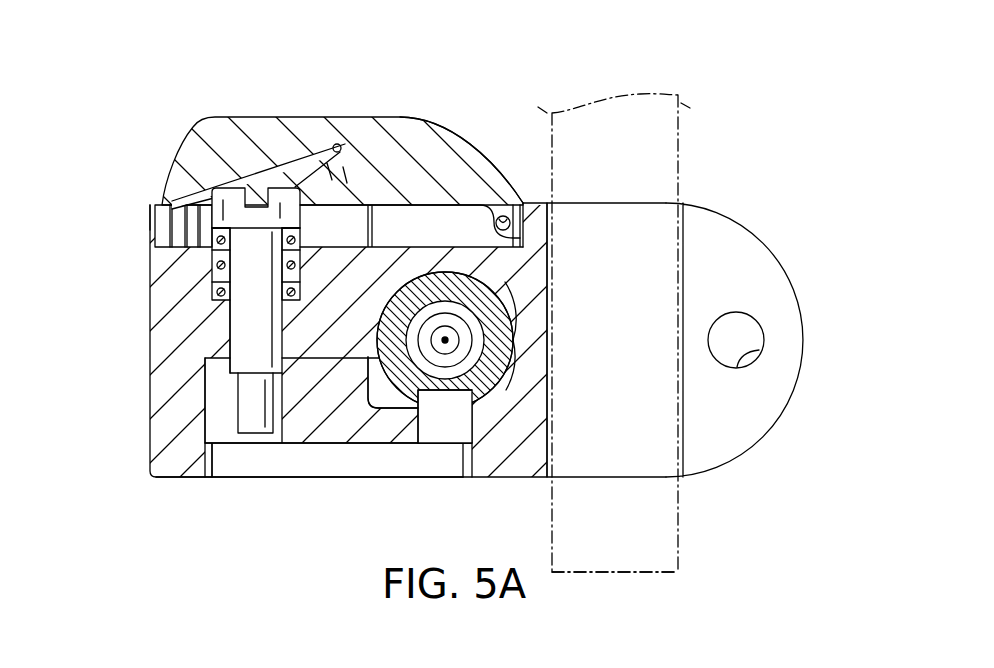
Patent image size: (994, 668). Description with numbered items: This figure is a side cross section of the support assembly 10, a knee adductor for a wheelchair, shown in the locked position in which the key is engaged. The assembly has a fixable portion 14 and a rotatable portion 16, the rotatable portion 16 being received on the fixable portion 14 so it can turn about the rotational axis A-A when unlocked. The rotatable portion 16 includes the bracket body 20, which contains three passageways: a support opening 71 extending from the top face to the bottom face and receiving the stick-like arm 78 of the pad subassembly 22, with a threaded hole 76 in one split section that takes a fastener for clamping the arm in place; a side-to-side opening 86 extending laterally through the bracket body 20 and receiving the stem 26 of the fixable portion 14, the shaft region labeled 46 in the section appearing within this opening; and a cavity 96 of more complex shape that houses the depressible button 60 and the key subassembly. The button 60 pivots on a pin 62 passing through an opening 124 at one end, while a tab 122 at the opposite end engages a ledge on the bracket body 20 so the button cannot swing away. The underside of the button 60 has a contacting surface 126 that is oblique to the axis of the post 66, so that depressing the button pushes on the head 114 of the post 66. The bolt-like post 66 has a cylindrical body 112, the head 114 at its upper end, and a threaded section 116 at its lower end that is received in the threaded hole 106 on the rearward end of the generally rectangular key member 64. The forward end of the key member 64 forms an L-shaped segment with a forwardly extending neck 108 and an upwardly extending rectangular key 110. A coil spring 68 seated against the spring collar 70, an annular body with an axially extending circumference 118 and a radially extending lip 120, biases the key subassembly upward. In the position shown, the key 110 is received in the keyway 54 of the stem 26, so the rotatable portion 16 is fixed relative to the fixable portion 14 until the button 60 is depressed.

The support assembly 10 is at (110, 88).
The fixable portion 14 is at (512, 339).
The rotatable portion 16 is at (176, 484).
The bracket body 20 is at (157, 365).
The pad subassembly 22 is at (680, 162).
The stem 26 is at (505, 300).
The rotor 46 is at (506, 390).
The keyway 54 is at (490, 437).
The depressible button 60 is at (245, 128).
The pin 62 is at (512, 208).
The key member 64 is at (307, 460).
The post 66 is at (240, 315).
The spring 68 is at (215, 252).
The spring collar 70 is at (215, 240).
The support opening 71 is at (682, 235).
The threaded hole 76 is at (753, 342).
The arm 78 is at (680, 532).
The side-to-side opening 86 is at (505, 282).
The cavity 96 is at (357, 470).
The threaded hole 106 is at (240, 412).
The neck 108 is at (412, 422).
The key 110 is at (417, 392).
The cylindrical body 112 is at (238, 336).
The head 114 is at (290, 197).
The threaded section 116 is at (250, 397).
The axially extending circumference 118 is at (290, 236).
The radially extending lip 120 is at (408, 170).
The tab 122 is at (157, 205).
The opening 124 is at (498, 215).
The contacting surface 126 is at (346, 143).
The rotational axis A-A is at (445, 340).